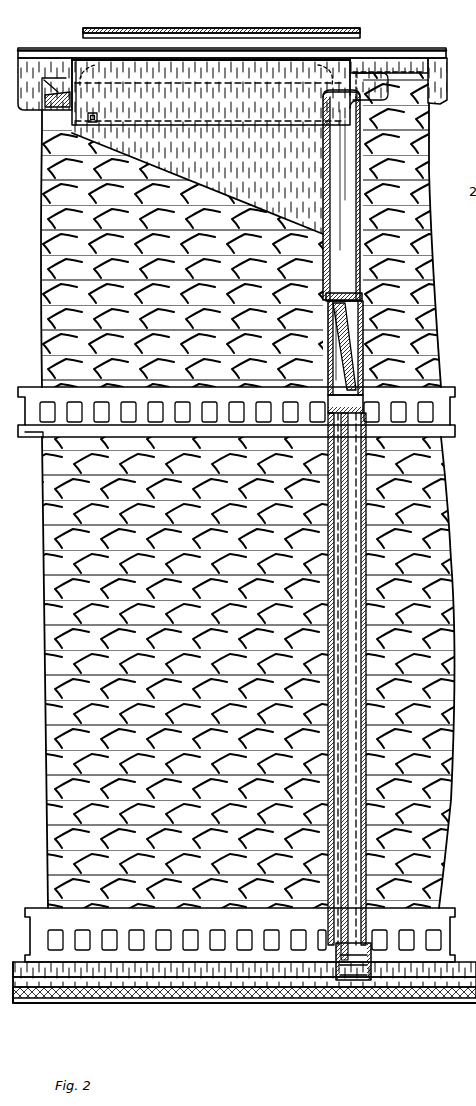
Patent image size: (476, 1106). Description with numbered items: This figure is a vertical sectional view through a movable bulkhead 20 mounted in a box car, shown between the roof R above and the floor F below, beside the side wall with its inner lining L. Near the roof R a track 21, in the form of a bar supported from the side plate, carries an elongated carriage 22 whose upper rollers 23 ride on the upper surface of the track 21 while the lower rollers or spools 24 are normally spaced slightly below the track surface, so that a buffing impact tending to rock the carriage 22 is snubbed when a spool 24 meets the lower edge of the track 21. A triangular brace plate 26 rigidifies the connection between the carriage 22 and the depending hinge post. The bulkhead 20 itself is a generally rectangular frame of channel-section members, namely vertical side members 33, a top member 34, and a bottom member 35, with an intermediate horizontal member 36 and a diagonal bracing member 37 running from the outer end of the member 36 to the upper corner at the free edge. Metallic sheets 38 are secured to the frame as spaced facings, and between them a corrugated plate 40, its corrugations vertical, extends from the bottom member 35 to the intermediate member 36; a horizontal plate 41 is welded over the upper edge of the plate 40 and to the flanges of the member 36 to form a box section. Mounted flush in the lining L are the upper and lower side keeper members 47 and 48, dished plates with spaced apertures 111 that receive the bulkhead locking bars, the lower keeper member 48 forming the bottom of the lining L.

The roof R is at (215, 27).
The upper rollers 23 is at (102, 77).
The lower rollers or spools 24 is at (97, 113).
The carriage 22 is at (214, 108).
The track 21 is at (57, 121).
The triangular brace plate 26 is at (219, 176).
The top member 34 is at (362, 111).
The metallic sheets 38 is at (363, 140).
The bulkhead 20 is at (346, 535).
The vertical side members 33 is at (351, 246).
The diagonal bracing member 37 is at (361, 294).
The intermediate horizontal member 36 is at (365, 380).
The apertures 111 is at (156, 420).
The upper side keeper member 47 is at (193, 421).
The horizontal plate 41 is at (320, 430).
The inner lining L is at (172, 528).
The corrugated plate 40 is at (340, 668).
The lower side keeper member 48 is at (246, 907).
The bottom member 35 is at (362, 936).
The floor F is at (254, 998).